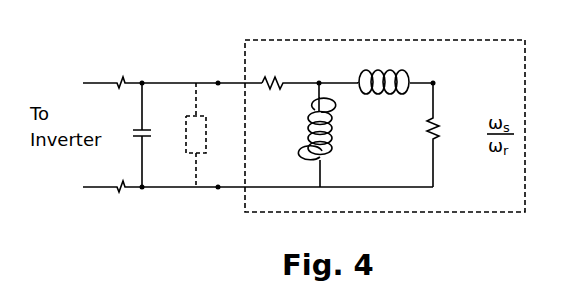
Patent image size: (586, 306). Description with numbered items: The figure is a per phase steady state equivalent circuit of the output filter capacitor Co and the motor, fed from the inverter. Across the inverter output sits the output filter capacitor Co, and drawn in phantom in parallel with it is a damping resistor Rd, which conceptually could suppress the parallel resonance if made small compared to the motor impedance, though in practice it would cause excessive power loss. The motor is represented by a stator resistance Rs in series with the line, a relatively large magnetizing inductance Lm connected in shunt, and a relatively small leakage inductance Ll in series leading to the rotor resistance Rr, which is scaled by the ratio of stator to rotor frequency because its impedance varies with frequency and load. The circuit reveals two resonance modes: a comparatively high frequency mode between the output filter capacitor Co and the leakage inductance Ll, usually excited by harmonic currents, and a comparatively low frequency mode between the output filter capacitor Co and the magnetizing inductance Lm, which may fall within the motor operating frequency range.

The output filter capacitor Co is at (149, 135).
The damping resistor Rd is at (209, 135).
The stator resistance Rs is at (310, 69).
The magnetizing inductance Lm is at (305, 134).
The leakage inductance Ll is at (397, 72).
The rotor resistance Rr is at (446, 135).